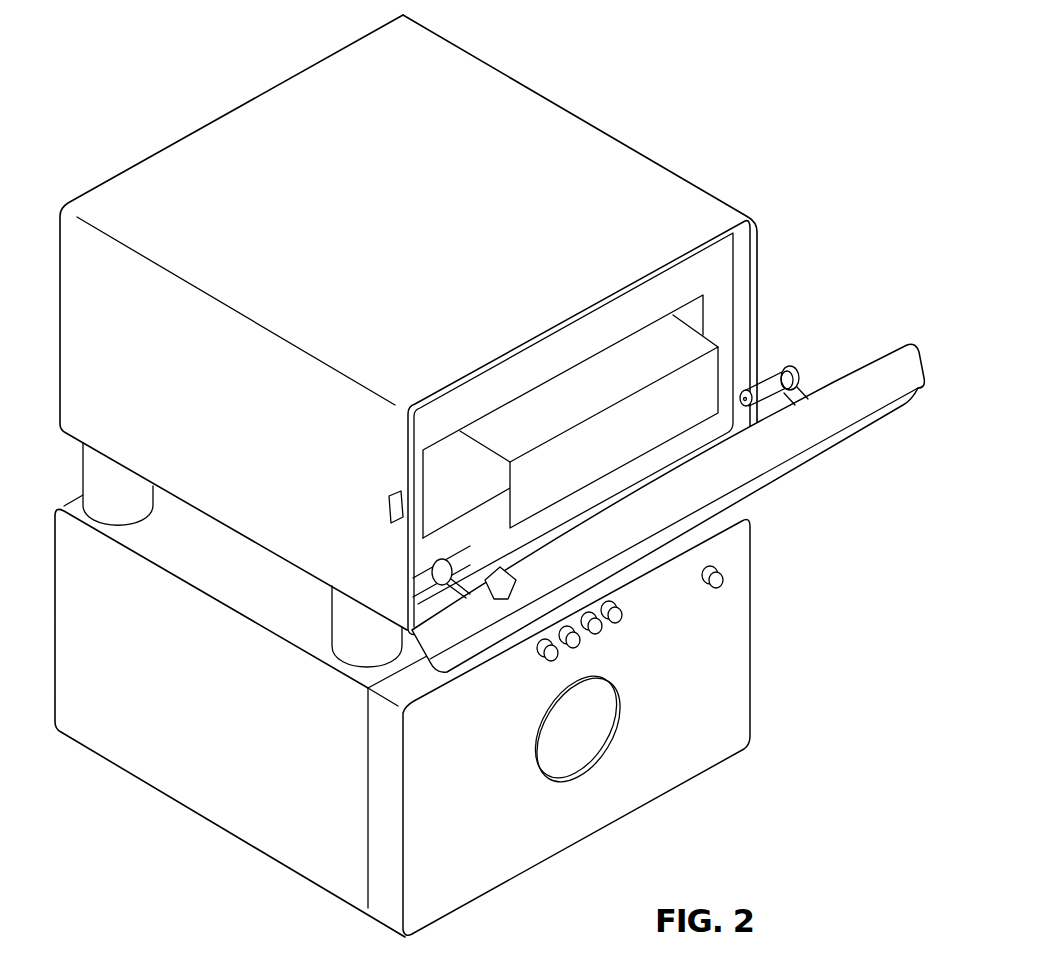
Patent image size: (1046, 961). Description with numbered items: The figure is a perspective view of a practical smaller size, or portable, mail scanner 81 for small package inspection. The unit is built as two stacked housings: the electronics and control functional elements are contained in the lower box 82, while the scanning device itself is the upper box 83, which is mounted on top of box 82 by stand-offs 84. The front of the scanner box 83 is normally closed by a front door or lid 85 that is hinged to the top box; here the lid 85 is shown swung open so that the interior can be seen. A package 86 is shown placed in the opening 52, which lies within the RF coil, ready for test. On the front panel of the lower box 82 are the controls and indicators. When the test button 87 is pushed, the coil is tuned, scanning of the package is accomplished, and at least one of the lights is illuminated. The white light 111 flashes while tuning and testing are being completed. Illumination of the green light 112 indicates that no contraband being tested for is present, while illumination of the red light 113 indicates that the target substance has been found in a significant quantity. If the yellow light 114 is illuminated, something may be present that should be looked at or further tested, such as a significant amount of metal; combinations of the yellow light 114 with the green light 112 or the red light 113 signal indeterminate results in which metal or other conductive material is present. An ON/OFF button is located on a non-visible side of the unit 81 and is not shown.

The mail scanner 81 is at (616, 105).
The box 82 is at (222, 808).
The box 83 is at (259, 101).
The stand-offs 84 is at (147, 503).
The front door or lid 85 is at (878, 366).
The package 86 is at (715, 372).
The opening 52 is at (430, 463).
The test button 87 is at (719, 584).
The white light 111 is at (622, 617).
The green light 112 is at (600, 632).
The red light 113 is at (547, 657).
The yellow light 114 is at (578, 649).